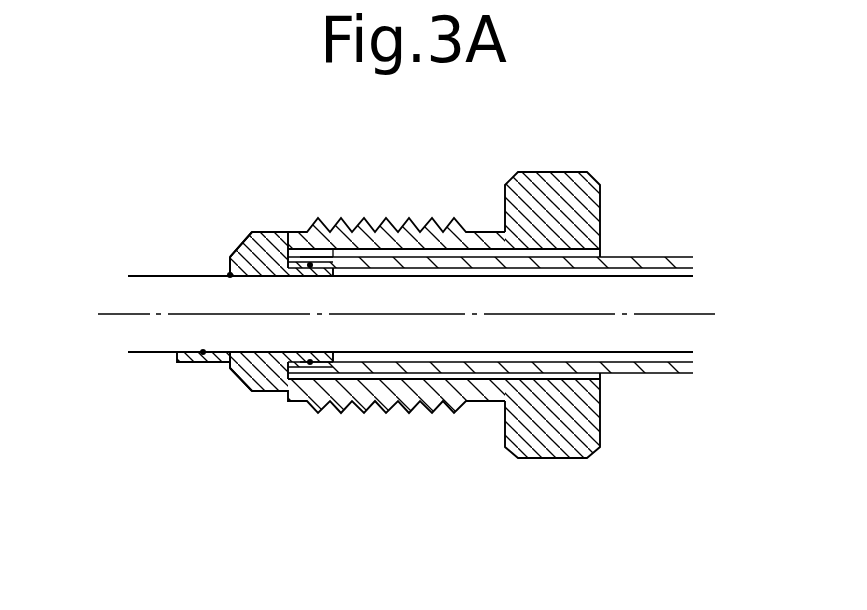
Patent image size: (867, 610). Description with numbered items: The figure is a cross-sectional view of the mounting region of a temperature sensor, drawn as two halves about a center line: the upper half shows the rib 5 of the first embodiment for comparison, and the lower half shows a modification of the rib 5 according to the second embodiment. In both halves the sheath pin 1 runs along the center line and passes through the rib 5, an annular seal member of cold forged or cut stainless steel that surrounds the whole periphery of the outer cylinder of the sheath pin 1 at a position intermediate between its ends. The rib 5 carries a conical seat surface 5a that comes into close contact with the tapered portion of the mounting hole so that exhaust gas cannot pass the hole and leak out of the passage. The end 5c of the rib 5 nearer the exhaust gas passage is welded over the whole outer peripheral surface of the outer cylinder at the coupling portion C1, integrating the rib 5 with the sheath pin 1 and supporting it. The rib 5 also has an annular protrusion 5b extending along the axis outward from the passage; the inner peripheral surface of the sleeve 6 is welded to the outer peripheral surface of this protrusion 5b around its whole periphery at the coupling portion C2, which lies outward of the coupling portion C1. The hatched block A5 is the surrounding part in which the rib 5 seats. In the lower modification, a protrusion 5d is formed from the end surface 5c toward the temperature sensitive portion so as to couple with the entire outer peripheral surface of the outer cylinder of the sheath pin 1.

The sheath pin 1 is at (170, 300).
The rib 5 is at (271, 232).
The seat surface 5a is at (242, 236).
The annular protrusion 5b is at (312, 263).
The end of the rib 5c is at (228, 273).
The protrusion 5d is at (192, 354).
The sleeve 6 is at (655, 263).
The collar A5 is at (552, 205).
The coupling portion C1 is at (229, 274).
The coupling portion C2 is at (321, 254).